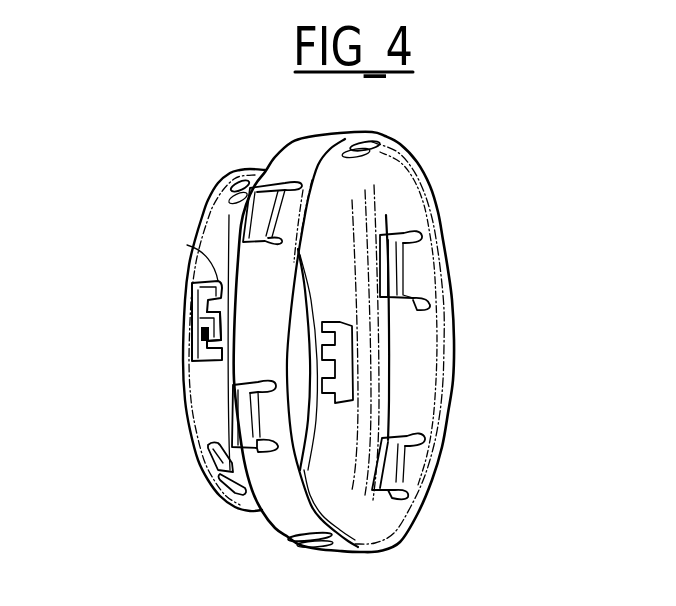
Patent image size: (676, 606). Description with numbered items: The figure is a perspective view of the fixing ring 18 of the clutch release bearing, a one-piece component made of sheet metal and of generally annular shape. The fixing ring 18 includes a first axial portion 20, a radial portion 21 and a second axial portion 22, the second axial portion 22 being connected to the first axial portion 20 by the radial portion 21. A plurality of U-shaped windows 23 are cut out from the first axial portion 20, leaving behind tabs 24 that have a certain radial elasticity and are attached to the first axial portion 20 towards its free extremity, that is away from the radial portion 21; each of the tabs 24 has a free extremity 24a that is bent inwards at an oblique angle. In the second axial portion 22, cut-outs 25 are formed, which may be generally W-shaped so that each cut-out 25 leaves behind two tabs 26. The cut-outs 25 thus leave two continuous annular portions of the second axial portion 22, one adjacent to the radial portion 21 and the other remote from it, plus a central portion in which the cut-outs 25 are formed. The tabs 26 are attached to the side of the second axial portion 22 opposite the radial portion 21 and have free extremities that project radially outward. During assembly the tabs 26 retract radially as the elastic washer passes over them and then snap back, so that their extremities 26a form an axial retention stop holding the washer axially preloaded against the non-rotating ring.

The fixing ring 18 is at (546, 168).
The first axial portion 20 is at (427, 382).
The radial portion 21 is at (377, 397).
The second axial portion 22 is at (203, 390).
The U-shaped windows 23 is at (433, 302).
The tabs 24 is at (405, 262).
The free extremity 24a is at (397, 460).
The cut-outs 25 is at (192, 360).
The tabs 26 is at (192, 300).
The extremities 26a is at (187, 247).